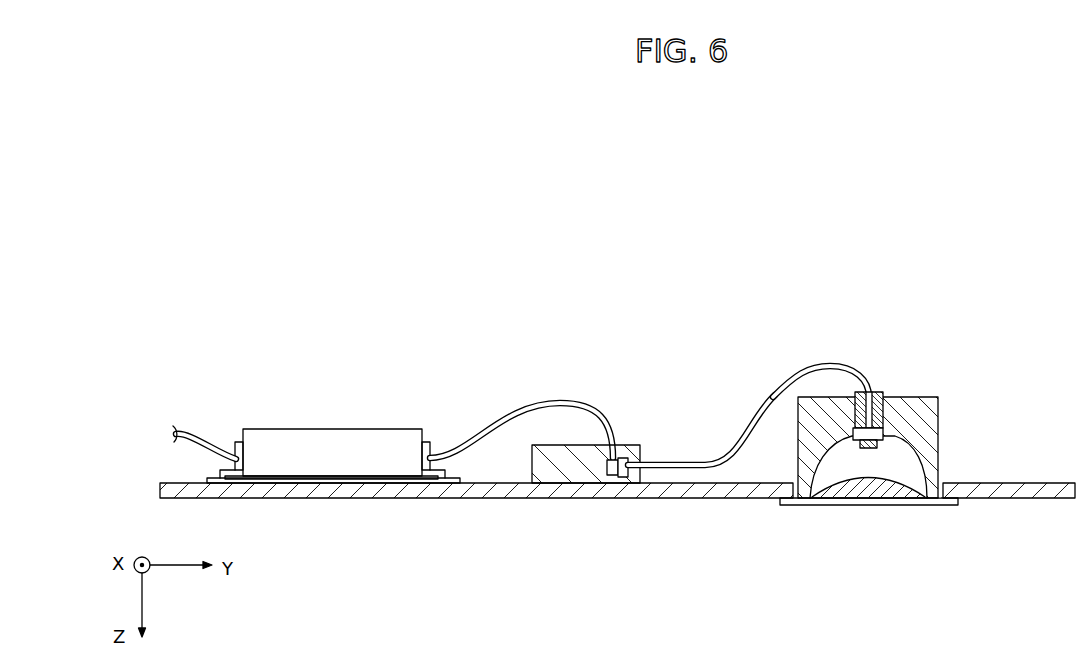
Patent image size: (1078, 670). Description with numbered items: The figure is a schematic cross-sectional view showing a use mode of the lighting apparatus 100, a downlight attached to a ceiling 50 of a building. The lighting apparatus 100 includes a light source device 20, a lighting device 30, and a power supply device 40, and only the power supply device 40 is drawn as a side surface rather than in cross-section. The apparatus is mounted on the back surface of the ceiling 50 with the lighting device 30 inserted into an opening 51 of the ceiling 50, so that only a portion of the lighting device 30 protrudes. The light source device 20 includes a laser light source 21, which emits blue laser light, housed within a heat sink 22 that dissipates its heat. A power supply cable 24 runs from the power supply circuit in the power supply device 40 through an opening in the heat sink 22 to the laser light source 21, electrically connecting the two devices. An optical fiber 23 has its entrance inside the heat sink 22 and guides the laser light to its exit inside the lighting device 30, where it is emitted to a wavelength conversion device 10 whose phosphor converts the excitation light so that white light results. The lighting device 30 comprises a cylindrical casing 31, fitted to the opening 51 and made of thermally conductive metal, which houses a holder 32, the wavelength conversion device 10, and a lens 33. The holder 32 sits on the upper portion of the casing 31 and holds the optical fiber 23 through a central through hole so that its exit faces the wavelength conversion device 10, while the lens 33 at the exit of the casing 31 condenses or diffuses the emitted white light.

The lighting apparatus 100 is at (983, 310).
The wavelength conversion device 10 is at (798, 383).
The light source device 20 is at (797, 318).
The laser light source 21 is at (620, 455).
The heat sink 22 is at (640, 445).
The optical fiber 23 is at (780, 400).
The power supply cable 24 is at (545, 401).
The lighting device 30 is at (973, 405).
The casing 31 is at (922, 403).
The holder 32 is at (877, 392).
The lens 33 is at (905, 507).
The power supply device 40 is at (262, 432).
The ceiling 50 is at (1052, 492).
The opening 51 is at (941, 481).